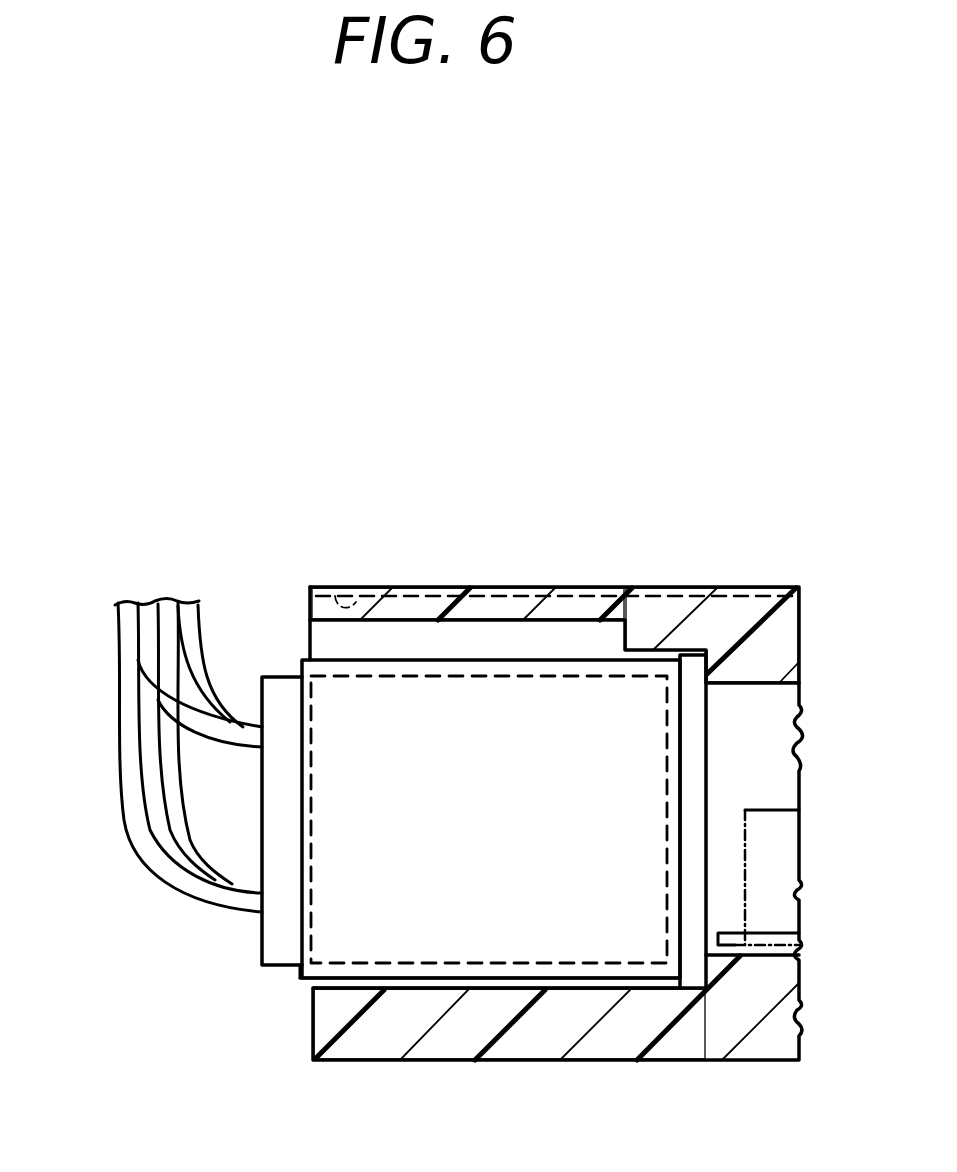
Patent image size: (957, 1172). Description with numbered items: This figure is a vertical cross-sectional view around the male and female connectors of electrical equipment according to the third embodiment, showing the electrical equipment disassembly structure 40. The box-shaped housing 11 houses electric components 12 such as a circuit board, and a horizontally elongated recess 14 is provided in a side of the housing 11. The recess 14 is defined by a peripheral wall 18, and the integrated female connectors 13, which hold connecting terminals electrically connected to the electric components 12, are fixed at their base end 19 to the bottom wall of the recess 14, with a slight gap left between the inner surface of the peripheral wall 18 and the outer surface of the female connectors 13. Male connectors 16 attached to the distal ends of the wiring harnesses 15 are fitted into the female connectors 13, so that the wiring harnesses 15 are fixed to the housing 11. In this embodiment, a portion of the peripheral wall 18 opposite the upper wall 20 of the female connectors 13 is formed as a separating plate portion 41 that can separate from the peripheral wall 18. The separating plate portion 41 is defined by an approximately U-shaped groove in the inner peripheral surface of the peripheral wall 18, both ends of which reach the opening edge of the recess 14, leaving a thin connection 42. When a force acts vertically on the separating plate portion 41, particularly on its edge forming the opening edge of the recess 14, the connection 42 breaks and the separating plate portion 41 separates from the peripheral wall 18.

The electrical equipment disassembly structure 40 is at (747, 475).
The housing 11 is at (772, 600).
The electric components 12 is at (770, 810).
The female connectors 13 is at (298, 970).
The recess 14 is at (375, 978).
The wiring harnesses 15 is at (120, 648).
The male connectors 16 is at (278, 675).
The peripheral wall 18 is at (672, 600).
The base end 19 is at (690, 962).
The upper wall 20 is at (411, 657).
The separating plate portion 41 is at (406, 585).
The connection 42 is at (335, 596).